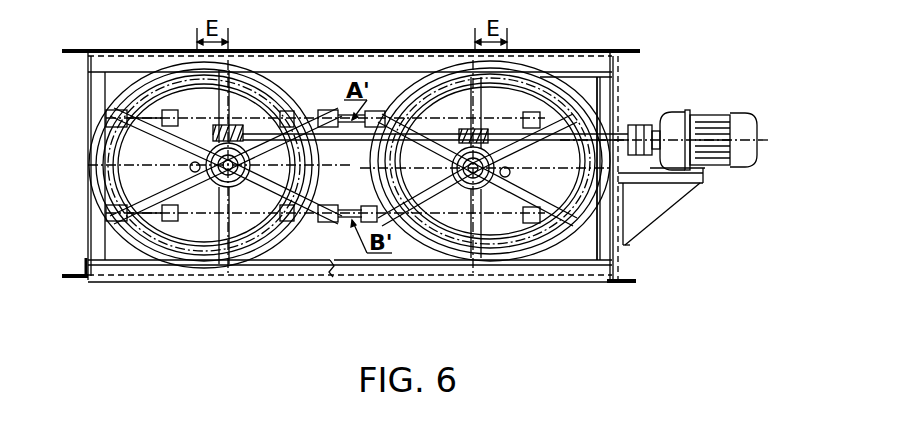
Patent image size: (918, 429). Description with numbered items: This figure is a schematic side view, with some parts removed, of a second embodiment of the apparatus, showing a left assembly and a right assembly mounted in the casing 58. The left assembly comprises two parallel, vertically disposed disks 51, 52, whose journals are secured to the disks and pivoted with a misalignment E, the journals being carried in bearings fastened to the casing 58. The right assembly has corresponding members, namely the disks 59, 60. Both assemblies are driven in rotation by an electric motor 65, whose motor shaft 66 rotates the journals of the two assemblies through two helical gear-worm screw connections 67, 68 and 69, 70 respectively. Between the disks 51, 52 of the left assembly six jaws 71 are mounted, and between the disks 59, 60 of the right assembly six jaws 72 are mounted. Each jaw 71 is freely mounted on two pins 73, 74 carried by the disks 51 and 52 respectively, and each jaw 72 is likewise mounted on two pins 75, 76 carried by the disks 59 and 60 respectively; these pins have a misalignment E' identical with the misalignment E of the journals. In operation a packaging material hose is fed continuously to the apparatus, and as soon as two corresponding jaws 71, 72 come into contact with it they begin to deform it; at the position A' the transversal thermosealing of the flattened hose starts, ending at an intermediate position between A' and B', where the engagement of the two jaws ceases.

The disk 51 is at (97, 139).
The disk 52 is at (122, 173).
The casing 58 is at (160, 212).
The disk 59 is at (563, 93).
The disk 60 is at (410, 296).
The electric motor 65 is at (703, 113).
The coupling 66 is at (614, 127).
The helical gear-worm screw connection 67 is at (210, 262).
The helical gear-worm screw connection 68 is at (215, 125).
The helical gear-worm screw connection 69 is at (488, 258).
The helical gear-worm screw connection 70 is at (506, 74).
The jaw 71 is at (325, 110).
The jaw 72 is at (368, 120).
The pin 73 is at (125, 112).
The pin 74 is at (190, 112).
The pin 75 is at (603, 123).
The pin 76 is at (546, 112).